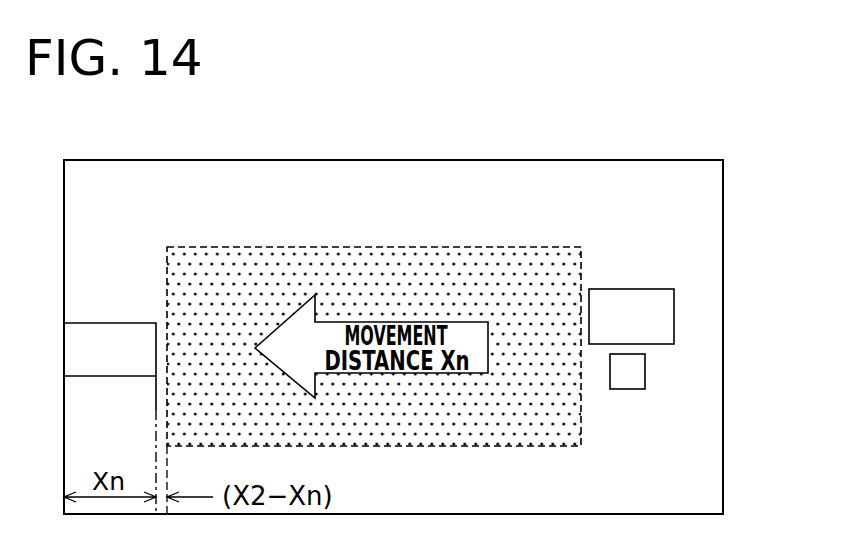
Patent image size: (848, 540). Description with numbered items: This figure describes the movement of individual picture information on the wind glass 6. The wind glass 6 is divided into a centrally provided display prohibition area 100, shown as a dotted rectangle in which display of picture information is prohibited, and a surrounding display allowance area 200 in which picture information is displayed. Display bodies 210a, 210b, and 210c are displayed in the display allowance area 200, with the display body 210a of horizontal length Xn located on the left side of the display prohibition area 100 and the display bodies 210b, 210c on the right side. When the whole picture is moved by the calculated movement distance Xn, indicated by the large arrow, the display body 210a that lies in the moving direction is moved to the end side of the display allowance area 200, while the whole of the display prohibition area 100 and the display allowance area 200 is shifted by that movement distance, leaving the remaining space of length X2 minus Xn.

The wind glass 6 is at (627, 160).
The display prohibition area 100 is at (428, 245).
The display allowance area 200 is at (298, 203).
The display body 210a is at (117, 323).
The display body 210b is at (674, 313).
The display body 210c is at (646, 370).